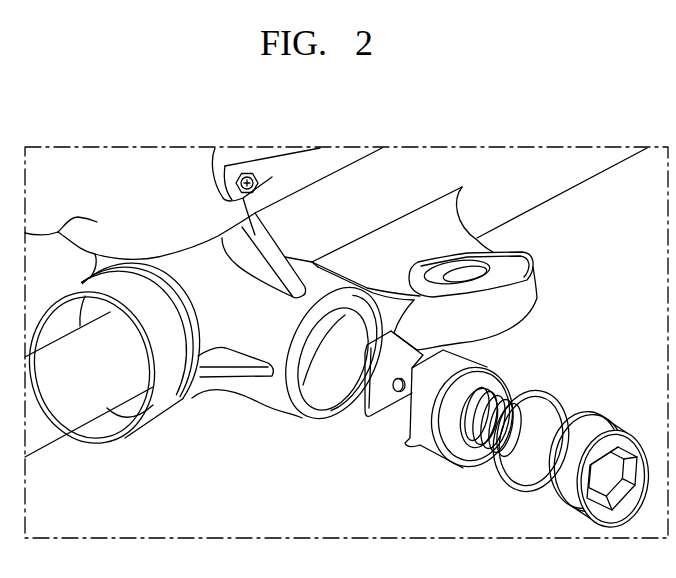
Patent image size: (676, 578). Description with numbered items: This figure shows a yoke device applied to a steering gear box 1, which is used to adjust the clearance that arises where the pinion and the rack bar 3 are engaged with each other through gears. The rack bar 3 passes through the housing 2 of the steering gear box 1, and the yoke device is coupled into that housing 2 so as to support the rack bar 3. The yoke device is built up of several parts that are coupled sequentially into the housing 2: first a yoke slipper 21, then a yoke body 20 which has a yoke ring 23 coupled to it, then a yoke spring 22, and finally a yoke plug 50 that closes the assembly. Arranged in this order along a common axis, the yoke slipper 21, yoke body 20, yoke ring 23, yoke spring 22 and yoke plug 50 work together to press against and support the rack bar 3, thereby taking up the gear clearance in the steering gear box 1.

The steering gear box 1 is at (220, 422).
The housing 2 is at (320, 390).
The rack bar 3 is at (60, 417).
The yoke body 20 is at (422, 445).
The yoke slipper 21 is at (378, 403).
The yoke spring 22 is at (480, 453).
The yoke ring 23 is at (552, 400).
The yoke plug 50 is at (607, 427).